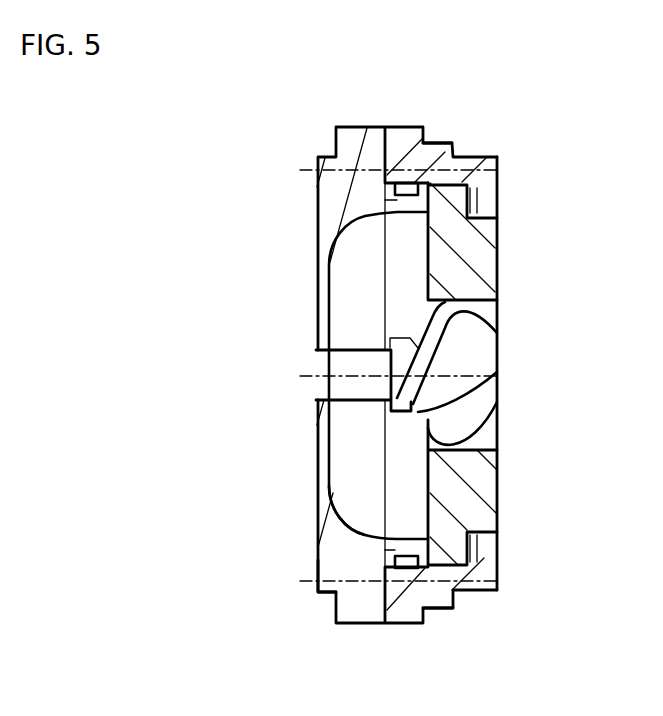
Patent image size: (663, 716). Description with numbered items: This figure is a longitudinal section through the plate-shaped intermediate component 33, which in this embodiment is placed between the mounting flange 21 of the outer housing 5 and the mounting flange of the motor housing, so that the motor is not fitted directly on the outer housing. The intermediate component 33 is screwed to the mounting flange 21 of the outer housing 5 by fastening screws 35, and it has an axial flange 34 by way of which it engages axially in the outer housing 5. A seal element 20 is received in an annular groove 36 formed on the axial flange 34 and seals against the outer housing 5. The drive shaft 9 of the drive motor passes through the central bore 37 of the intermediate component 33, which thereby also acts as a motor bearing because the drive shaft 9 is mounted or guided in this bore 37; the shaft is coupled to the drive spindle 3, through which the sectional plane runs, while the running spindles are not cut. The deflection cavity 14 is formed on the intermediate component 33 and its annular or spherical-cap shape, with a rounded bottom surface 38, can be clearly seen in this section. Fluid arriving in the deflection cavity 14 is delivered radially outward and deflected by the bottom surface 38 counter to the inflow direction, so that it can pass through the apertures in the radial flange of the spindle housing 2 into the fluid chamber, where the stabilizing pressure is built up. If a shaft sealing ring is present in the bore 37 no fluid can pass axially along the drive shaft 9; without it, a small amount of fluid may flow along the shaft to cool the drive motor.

The spindle housing 2 is at (473, 247).
The drive spindle 3 is at (467, 325).
The outer housing 5 is at (467, 172).
The drive shaft 9 is at (337, 387).
The deflection cavity 14 is at (363, 468).
The seal element 20 is at (404, 569).
The mounting flange 21 is at (397, 135).
The intermediate component 33 is at (335, 567).
The axial flange 34 is at (407, 200).
The fastening screws 35 is at (438, 607).
The annular groove 36 is at (405, 550).
The central bore 37 is at (317, 346).
The rounded bottom surface 38 is at (346, 515).